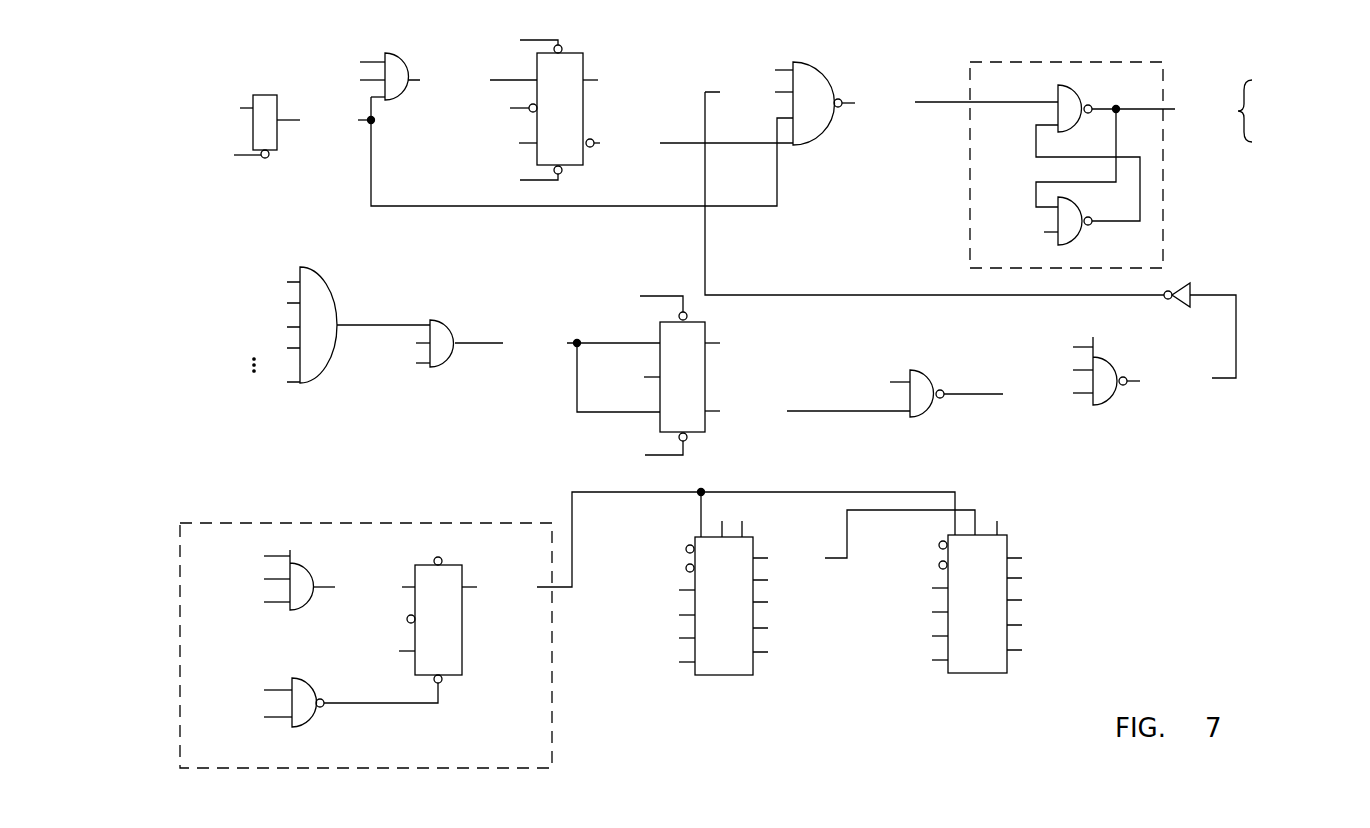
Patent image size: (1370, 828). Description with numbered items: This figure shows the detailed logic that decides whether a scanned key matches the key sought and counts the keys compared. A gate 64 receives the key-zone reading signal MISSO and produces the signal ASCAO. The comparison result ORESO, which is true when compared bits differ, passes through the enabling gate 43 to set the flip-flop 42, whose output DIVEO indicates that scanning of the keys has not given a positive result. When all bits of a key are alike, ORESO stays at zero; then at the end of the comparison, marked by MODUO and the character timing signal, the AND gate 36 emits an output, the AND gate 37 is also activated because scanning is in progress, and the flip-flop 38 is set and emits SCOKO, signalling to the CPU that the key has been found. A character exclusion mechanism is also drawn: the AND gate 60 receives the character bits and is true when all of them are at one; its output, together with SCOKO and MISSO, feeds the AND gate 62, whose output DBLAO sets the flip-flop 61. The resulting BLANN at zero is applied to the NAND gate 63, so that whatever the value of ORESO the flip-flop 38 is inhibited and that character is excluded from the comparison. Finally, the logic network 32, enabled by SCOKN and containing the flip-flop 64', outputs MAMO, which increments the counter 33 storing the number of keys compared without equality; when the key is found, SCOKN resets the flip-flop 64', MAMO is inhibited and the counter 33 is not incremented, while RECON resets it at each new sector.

The gate 64 is at (272, 134).
The enabling gate 43 is at (399, 100).
The flip-flop 42 is at (588, 57).
The AND gate 37 is at (822, 72).
The flip-flop 38 is at (1105, 58).
The AND gate 60 is at (330, 293).
The AND gate 62 is at (452, 325).
The flip-flop 61 is at (700, 436).
The NAND gate 63 is at (925, 418).
The AND gate 36 is at (1120, 400).
The logic network 32 is at (282, 517).
The flip-flop 64' is at (436, 620).
The counter 33 is at (706, 687).